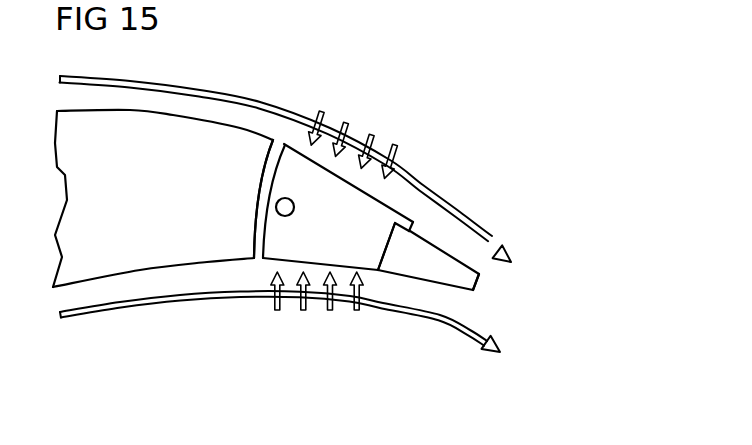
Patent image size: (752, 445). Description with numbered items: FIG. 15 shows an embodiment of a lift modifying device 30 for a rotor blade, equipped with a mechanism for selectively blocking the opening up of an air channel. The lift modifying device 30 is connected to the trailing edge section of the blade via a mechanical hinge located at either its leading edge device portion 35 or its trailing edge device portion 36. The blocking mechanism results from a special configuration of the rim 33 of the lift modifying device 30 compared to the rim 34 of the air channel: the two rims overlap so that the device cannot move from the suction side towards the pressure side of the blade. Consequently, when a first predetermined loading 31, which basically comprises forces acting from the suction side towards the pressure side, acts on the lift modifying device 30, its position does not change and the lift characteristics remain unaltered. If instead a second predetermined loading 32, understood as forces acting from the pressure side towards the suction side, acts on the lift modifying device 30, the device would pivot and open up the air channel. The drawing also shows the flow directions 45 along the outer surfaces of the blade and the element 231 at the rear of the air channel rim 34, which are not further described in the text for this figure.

The lift modifying device 30 is at (320, 238).
The first predetermined loading 31 is at (313, 106).
The second predetermined loading 32 is at (369, 306).
The rim of the lift modifying device 33 is at (417, 223).
The rim of the air channel 34 is at (392, 250).
The leading edge device portion 35 is at (256, 203).
The trailing edge device portion 36 is at (378, 271).
The flow direction 45 is at (477, 222).
The rear face 231 is at (480, 278).